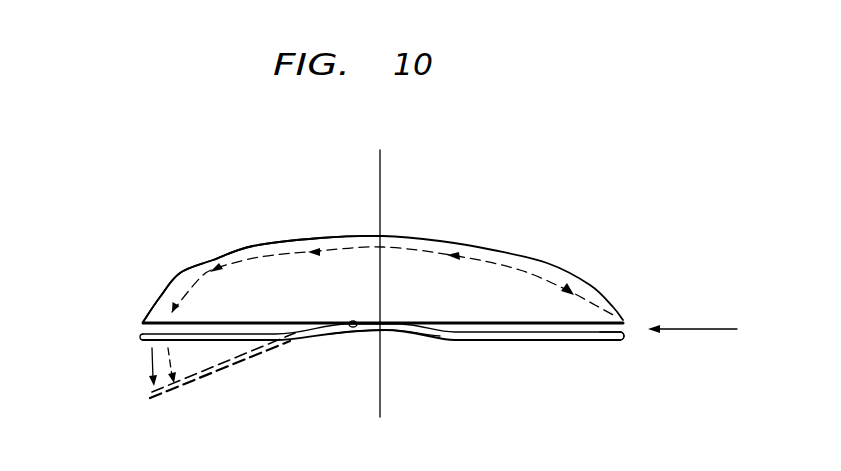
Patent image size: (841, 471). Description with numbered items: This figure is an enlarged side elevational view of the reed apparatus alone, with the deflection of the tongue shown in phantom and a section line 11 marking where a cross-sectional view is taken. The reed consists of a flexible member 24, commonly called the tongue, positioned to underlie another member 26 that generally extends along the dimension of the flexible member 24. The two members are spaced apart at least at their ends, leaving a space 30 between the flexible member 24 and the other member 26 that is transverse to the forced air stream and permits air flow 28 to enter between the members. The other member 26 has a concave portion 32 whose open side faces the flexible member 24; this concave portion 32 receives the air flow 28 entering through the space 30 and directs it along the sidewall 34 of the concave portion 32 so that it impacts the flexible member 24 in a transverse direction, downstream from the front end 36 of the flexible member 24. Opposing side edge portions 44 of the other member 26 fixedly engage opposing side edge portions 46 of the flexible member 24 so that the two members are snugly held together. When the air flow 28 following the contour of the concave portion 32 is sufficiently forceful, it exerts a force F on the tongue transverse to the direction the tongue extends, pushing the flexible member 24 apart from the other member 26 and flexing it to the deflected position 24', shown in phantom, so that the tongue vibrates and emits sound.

The section line 11 is at (380, 150).
The flexible member 24 is at (338, 366).
The deflected position 24' is at (192, 382).
The other member 26 is at (548, 262).
The air flow 28 is at (247, 263).
The space 30 is at (628, 325).
The concave portion 32 is at (178, 272).
The sidewall 34 is at (262, 244).
The front end 36 is at (626, 341).
The opposing side edge portions 44 is at (354, 320).
The opposing side edge portions 46 is at (360, 331).
The force F is at (154, 367).